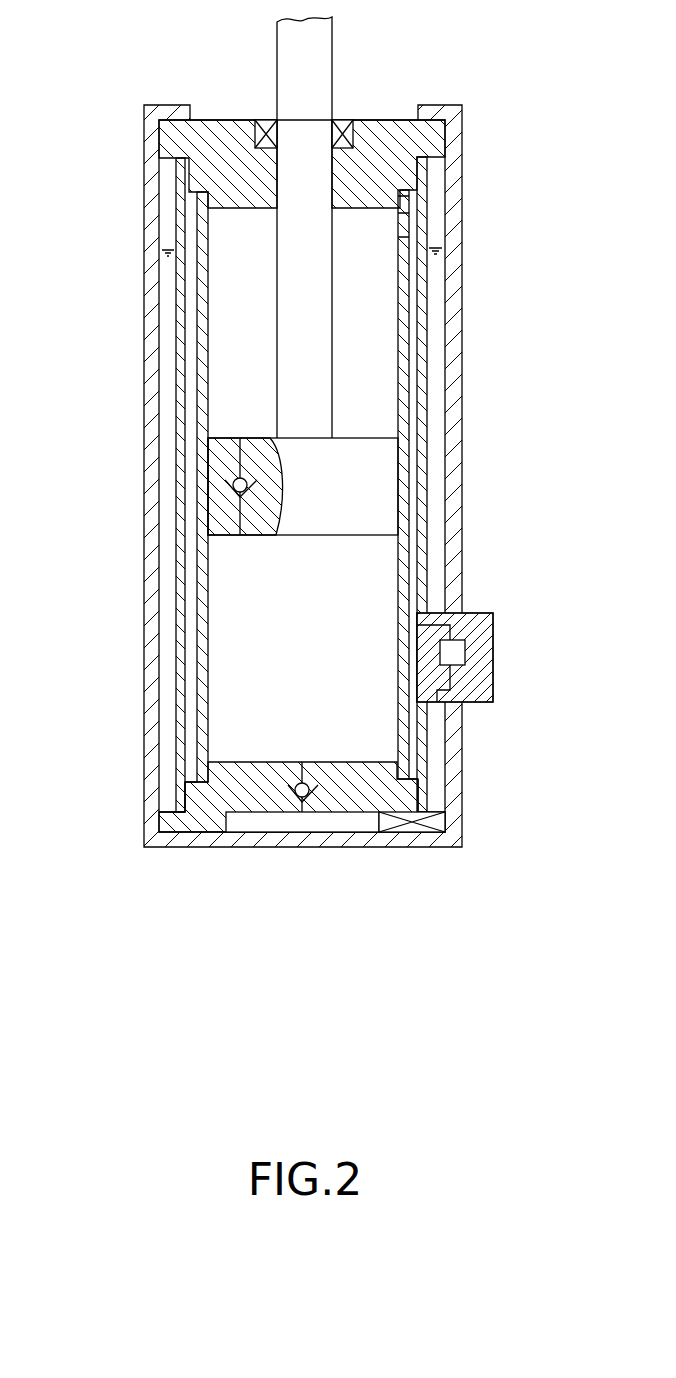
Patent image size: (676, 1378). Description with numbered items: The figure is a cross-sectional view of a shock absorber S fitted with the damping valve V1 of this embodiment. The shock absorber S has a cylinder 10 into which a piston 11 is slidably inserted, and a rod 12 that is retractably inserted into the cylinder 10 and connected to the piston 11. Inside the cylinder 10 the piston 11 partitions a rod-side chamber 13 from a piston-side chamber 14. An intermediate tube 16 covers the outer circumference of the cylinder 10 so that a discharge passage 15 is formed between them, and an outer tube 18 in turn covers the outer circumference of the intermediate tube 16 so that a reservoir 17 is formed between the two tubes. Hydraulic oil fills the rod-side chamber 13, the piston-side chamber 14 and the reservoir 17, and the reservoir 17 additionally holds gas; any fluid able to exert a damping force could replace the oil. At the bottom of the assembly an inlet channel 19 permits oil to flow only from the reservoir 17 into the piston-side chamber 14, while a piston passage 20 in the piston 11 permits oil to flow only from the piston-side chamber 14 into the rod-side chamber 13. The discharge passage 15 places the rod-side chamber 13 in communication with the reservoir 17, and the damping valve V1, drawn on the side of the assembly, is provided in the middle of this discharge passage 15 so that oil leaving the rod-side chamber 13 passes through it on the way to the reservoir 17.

The shock absorber S is at (140, 110).
The cylinder 10 is at (205, 365).
The piston 11 is at (370, 488).
The rod 12 is at (320, 72).
The rod-side chamber 13 is at (248, 321).
The piston-side chamber 14 is at (272, 652).
The discharge passage 15 is at (410, 362).
The intermediate tube 16 is at (422, 307).
The reservoir 17 is at (170, 212).
The outer tube 18 is at (450, 212).
The inlet channel 19 is at (301, 800).
The piston passage 20 is at (238, 523).
The damping valve V1 is at (467, 612).